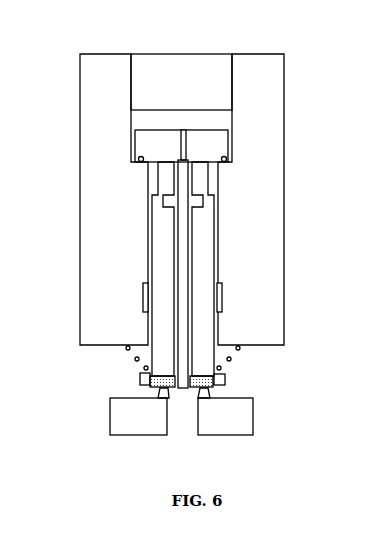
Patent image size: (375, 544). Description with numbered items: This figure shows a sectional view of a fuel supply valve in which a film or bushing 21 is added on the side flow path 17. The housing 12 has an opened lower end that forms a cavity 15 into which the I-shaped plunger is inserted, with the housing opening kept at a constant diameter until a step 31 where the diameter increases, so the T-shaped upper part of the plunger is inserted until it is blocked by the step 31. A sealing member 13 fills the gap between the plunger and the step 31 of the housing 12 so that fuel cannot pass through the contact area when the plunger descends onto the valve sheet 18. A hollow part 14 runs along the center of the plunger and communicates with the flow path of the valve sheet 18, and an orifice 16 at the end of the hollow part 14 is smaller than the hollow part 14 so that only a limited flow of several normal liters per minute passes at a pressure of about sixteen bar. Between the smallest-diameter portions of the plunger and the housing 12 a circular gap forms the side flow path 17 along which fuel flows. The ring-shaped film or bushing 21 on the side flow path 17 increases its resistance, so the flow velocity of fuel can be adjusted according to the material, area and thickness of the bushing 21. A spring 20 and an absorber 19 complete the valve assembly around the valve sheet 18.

The housing 12 is at (258, 303).
The sealing member 13 is at (139, 157).
The hollow part 14 is at (185, 312).
The cavity 15 is at (199, 116).
The orifice 16 is at (184, 132).
The side flow path 17 is at (152, 238).
The valve sheet 18 is at (128, 415).
The absorber 19 is at (225, 378).
The spring 20 is at (231, 360).
The film or bushing 21 is at (144, 290).
The step 31 is at (150, 168).